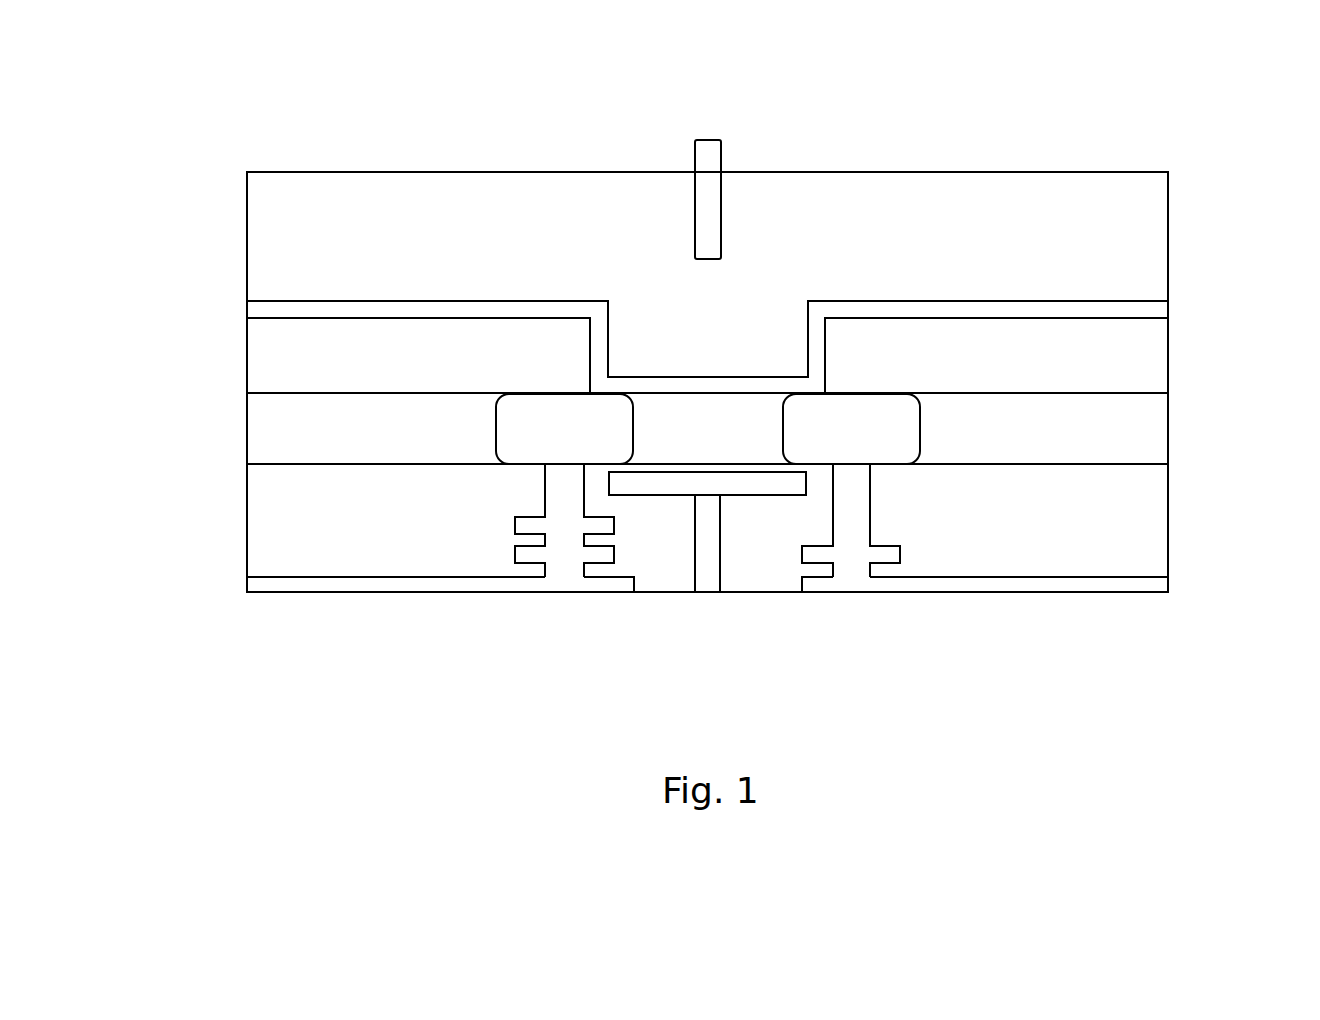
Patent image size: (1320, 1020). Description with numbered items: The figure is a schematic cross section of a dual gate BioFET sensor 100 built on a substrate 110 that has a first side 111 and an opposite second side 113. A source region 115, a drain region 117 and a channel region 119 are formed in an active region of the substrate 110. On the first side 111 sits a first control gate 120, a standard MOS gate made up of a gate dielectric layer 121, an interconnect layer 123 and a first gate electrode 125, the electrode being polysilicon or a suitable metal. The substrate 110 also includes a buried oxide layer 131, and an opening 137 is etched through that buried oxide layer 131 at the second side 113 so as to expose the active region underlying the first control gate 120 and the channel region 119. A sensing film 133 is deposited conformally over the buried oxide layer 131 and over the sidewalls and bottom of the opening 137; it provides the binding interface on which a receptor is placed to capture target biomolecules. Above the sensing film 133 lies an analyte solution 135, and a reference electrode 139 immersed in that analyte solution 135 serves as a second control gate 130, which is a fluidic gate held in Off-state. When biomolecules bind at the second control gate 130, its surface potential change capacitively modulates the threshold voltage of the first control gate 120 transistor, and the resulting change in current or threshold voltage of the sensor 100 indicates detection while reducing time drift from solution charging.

The dual gate BioFET sensor 100 is at (183, 83).
The substrate 110 is at (1158, 430).
The first side 111 is at (1150, 464).
The second side 113 is at (1150, 393).
The source region 115 is at (515, 430).
The drain region 117 is at (893, 442).
The channel region 119 is at (660, 412).
The first control gate 120 is at (672, 554).
The gate dielectric layer 121 is at (1158, 530).
The interconnect layer 123 is at (1158, 586).
The first gate electrode 125 is at (749, 480).
The second control gate 130 is at (674, 214).
The buried oxide layer 131 is at (1158, 350).
The sensing film 133 is at (1158, 310).
The analyte solution 135 is at (1158, 240).
The opening 137 is at (723, 334).
The reference electrode 139 is at (707, 140).